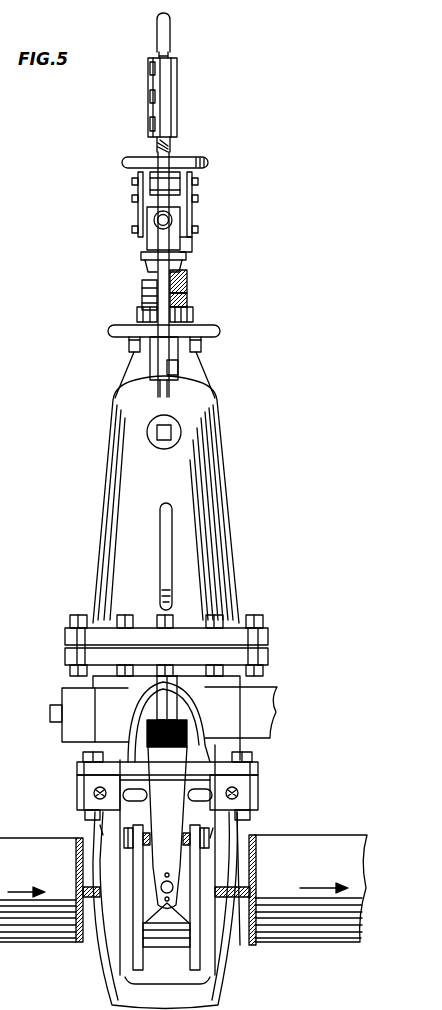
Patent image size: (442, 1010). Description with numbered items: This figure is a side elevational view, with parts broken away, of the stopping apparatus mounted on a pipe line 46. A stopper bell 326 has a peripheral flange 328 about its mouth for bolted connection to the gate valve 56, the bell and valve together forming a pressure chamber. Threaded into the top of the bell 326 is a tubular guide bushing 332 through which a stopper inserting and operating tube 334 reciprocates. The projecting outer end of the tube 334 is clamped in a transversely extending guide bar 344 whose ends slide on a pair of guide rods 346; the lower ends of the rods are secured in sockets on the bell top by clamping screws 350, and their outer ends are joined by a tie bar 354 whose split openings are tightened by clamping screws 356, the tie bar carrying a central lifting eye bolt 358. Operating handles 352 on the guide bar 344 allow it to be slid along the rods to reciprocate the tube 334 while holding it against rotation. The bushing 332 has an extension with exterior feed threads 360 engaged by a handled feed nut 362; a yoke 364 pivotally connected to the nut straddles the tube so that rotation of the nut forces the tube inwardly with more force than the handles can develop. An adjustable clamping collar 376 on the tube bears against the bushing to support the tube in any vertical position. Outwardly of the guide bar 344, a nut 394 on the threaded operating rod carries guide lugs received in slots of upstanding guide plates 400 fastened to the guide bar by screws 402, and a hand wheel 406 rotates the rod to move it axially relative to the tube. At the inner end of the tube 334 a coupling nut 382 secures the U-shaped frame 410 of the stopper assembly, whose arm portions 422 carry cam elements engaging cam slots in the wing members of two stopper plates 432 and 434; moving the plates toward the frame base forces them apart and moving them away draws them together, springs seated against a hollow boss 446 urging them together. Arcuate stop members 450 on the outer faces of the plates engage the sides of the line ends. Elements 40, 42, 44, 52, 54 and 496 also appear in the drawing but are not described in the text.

The lifting eye bolt 358 is at (171, 29).
The tie bar 354 is at (178, 88).
The clamping screws 356 is at (149, 124).
The hand wheel 406 is at (207, 162).
The nut 394 is at (140, 180).
The guide plates 400 is at (193, 203).
The screws 402 is at (151, 222).
The operating handles 352 is at (148, 243).
The guide bar 344 is at (186, 246).
The yoke 364 is at (142, 257).
The adjustable clamping collar 376 is at (188, 279).
The feed threads 360 is at (142, 298).
The guide rods 346 is at (188, 300).
The feed nut 362 is at (194, 315).
The guide bushing 332 is at (201, 343).
The clamping screws 350 is at (179, 368).
The indicator window 496 is at (182, 432).
The stopper bell 326 is at (226, 478).
The peripheral flange 328 is at (270, 631).
The gate valve 56 is at (256, 687).
The stopper inserting and operating tube 334 is at (151, 708).
The coupling nut 382 is at (188, 734).
The U-shaped frame 410 is at (205, 765).
The nuts 54 is at (83, 757).
The bracket plates 52 is at (259, 793).
The stop members 450 is at (214, 836).
The arm portions 422 is at (182, 825).
The outlet pipe 42 is at (238, 854).
The pipe line 46 is at (32, 944).
The hollow boss 446 is at (175, 942).
The stopper plate 432 is at (135, 962).
The stopper plate 434 is at (199, 952).
The body wall 44 is at (243, 971).
The valve body 40 is at (232, 985).